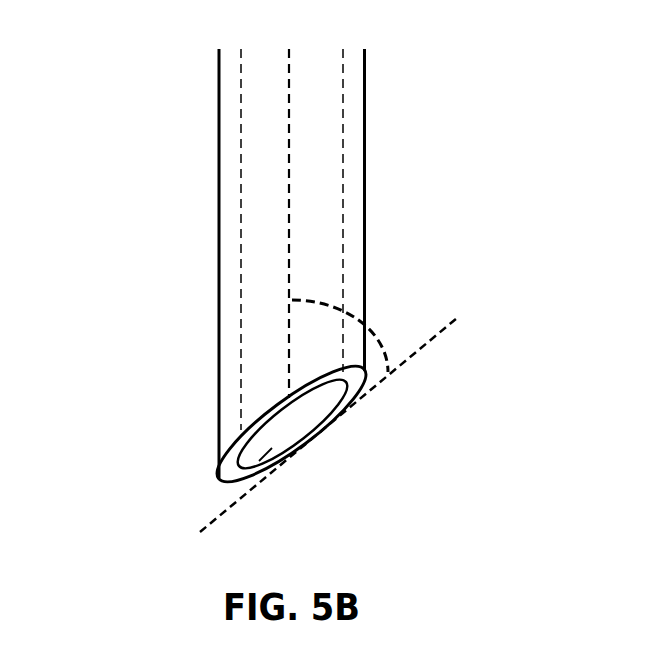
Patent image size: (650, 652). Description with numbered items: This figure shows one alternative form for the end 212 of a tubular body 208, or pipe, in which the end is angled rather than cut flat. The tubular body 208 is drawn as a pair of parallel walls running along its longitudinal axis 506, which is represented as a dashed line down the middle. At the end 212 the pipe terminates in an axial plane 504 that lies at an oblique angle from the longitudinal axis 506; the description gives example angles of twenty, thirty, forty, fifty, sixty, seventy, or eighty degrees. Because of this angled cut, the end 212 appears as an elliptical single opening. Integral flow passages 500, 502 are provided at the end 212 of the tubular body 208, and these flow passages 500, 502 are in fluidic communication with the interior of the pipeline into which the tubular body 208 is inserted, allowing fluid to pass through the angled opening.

The tubular body 208 is at (225, 173).
The end 212 is at (353, 385).
The flow passage 500 is at (228, 480).
The flow passage 502 is at (267, 298).
The axial plane 504 is at (377, 337).
The longitudinal axis 506 is at (290, 130).